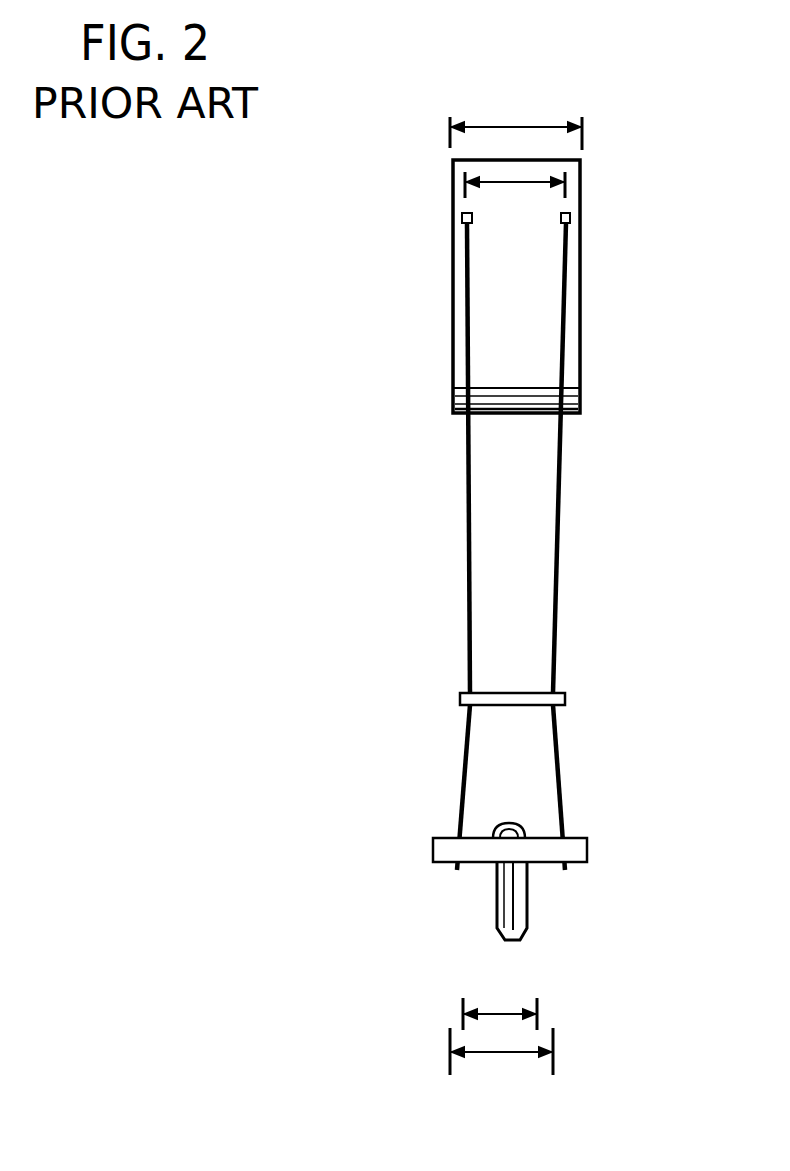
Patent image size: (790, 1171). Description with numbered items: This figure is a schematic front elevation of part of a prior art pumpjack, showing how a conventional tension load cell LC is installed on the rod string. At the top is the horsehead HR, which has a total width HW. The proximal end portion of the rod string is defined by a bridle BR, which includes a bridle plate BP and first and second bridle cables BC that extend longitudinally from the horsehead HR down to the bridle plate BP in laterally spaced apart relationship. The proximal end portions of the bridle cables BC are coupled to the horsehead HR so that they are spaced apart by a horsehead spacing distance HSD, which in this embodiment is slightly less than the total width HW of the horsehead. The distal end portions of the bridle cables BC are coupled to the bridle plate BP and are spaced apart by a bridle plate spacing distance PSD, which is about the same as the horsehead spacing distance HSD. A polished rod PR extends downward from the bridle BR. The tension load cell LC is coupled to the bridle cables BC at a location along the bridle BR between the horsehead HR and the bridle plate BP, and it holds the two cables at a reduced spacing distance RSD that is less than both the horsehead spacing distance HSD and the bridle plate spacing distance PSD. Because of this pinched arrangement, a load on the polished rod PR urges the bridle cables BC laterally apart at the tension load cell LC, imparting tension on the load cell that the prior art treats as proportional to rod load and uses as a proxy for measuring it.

The total width of the horsehead HW is at (492, 127).
The horsehead spacing distance HSD is at (488, 183).
The horsehead HR is at (580, 268).
The bridle cable BC is at (466, 510).
The bridle BR is at (362, 615).
The tension load cell LC is at (456, 700).
The bridle plate BP is at (432, 846).
The polished rod PR is at (525, 910).
The reduced spacing distance RSD is at (508, 1014).
The bridle plate spacing distance PSD is at (490, 1052).